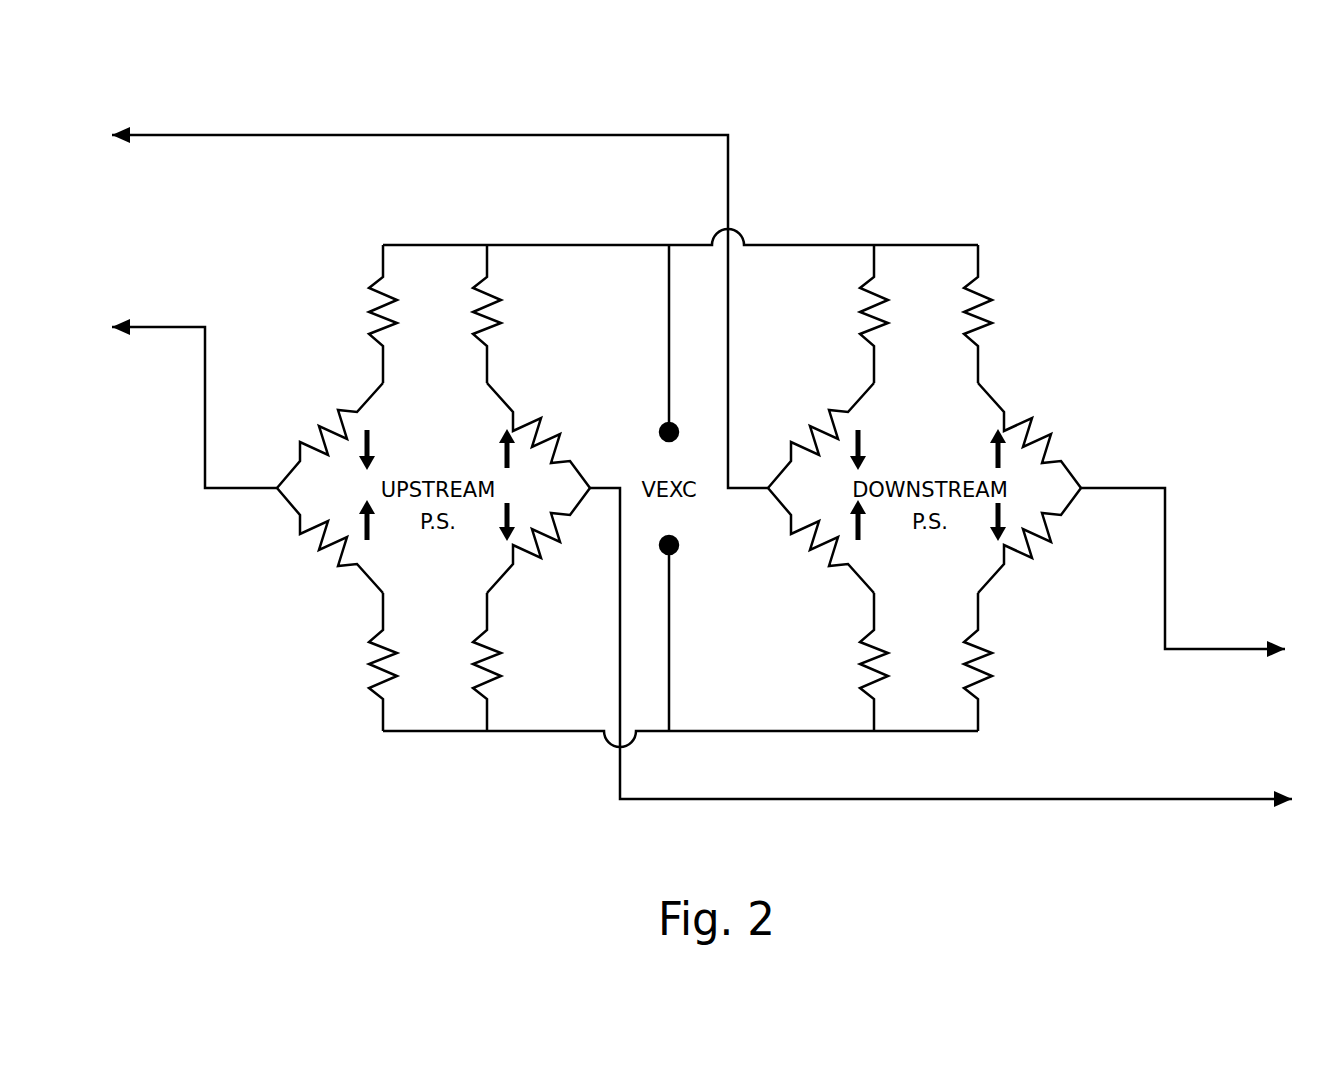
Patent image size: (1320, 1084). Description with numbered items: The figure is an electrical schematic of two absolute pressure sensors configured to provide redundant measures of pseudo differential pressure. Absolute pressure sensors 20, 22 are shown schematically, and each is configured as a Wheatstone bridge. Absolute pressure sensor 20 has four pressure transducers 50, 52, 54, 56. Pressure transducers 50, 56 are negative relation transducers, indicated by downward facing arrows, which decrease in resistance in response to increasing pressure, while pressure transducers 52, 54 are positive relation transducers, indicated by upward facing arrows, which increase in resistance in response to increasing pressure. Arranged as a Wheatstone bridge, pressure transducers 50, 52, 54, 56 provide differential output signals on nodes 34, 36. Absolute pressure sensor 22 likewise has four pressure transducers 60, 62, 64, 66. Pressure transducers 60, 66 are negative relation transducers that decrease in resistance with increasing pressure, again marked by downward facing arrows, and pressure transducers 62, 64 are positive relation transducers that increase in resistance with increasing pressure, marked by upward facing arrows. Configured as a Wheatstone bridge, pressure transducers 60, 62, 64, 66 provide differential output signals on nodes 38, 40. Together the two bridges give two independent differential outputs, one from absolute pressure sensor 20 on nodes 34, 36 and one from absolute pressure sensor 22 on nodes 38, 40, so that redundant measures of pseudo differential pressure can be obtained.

The absolute pressure sensor 20 is at (302, 336).
The absolute pressure sensor 22 is at (1108, 354).
The node 34 is at (256, 492).
The node 36 is at (622, 478).
The node 38 is at (548, 133).
The node 40 is at (1167, 556).
The pressure transducer 50 is at (310, 437).
The pressure transducer 52 is at (340, 568).
The pressure transducer 54 is at (523, 414).
The pressure transducer 56 is at (521, 570).
The pressure transducer 60 is at (838, 408).
The pressure transducer 62 is at (833, 568).
The pressure transducer 64 is at (1017, 407).
The pressure transducer 66 is at (1010, 567).